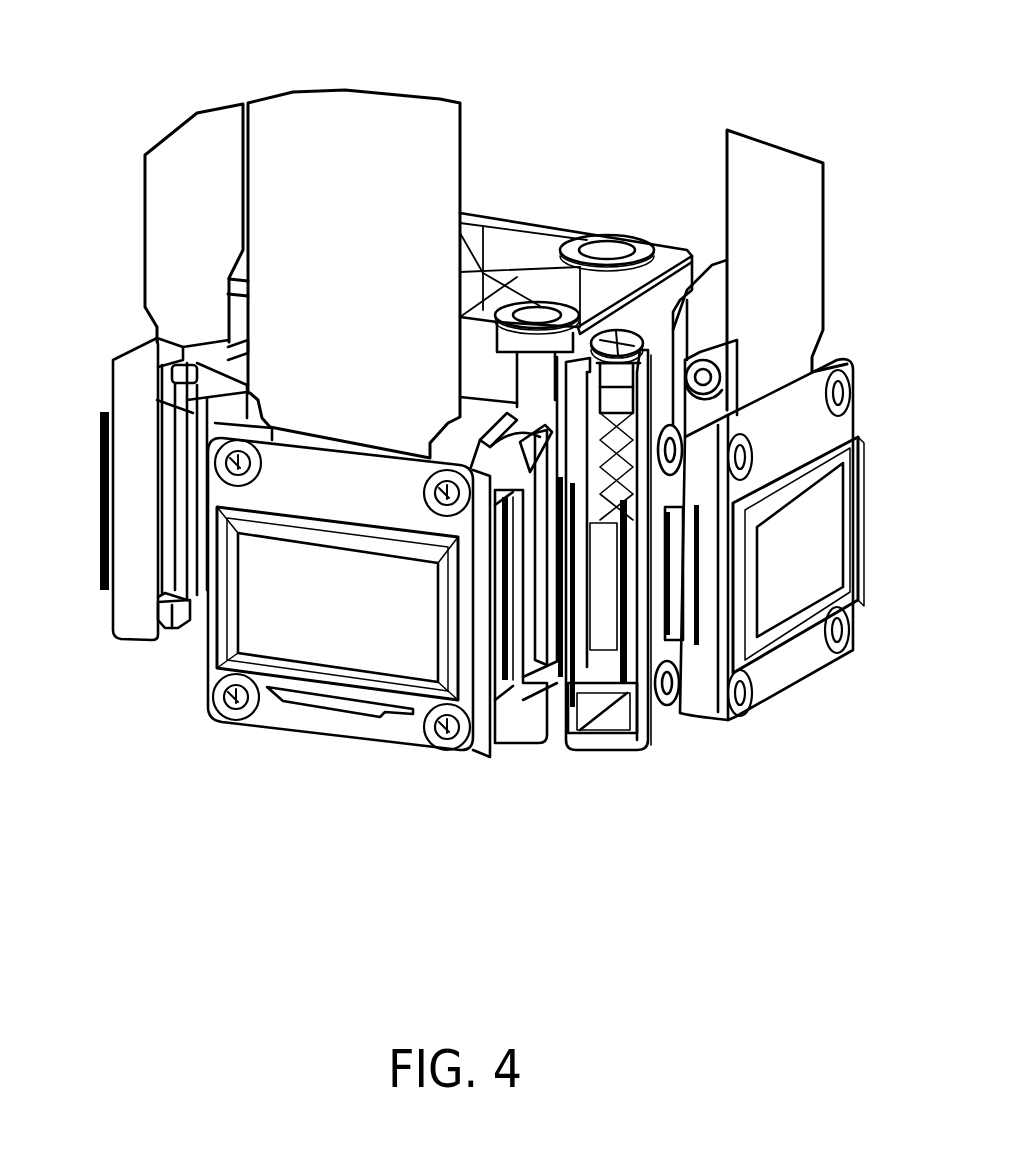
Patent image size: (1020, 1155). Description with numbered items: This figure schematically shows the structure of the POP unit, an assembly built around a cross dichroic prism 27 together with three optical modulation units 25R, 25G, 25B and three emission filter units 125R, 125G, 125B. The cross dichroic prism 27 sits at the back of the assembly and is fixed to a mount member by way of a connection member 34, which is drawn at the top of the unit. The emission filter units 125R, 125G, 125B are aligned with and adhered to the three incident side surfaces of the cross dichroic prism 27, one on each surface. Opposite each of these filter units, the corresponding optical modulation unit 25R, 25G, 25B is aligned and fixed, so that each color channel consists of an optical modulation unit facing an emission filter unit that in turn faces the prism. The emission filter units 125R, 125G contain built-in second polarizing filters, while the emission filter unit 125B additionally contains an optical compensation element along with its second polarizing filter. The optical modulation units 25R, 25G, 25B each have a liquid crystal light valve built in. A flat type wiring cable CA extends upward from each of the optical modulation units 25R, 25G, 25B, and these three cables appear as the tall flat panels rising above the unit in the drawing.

The flat type wiring cable CA is at (180, 167).
The cross dichroic prism 27 is at (548, 417).
The connection member 34 is at (665, 252).
The optical modulation unit 25R is at (130, 632).
The emission filter unit 125R is at (178, 614).
The optical modulation unit 25G is at (482, 728).
The emission filter unit 125G is at (525, 732).
The emission filter unit 125B is at (650, 728).
The optical modulation unit 25B is at (705, 708).